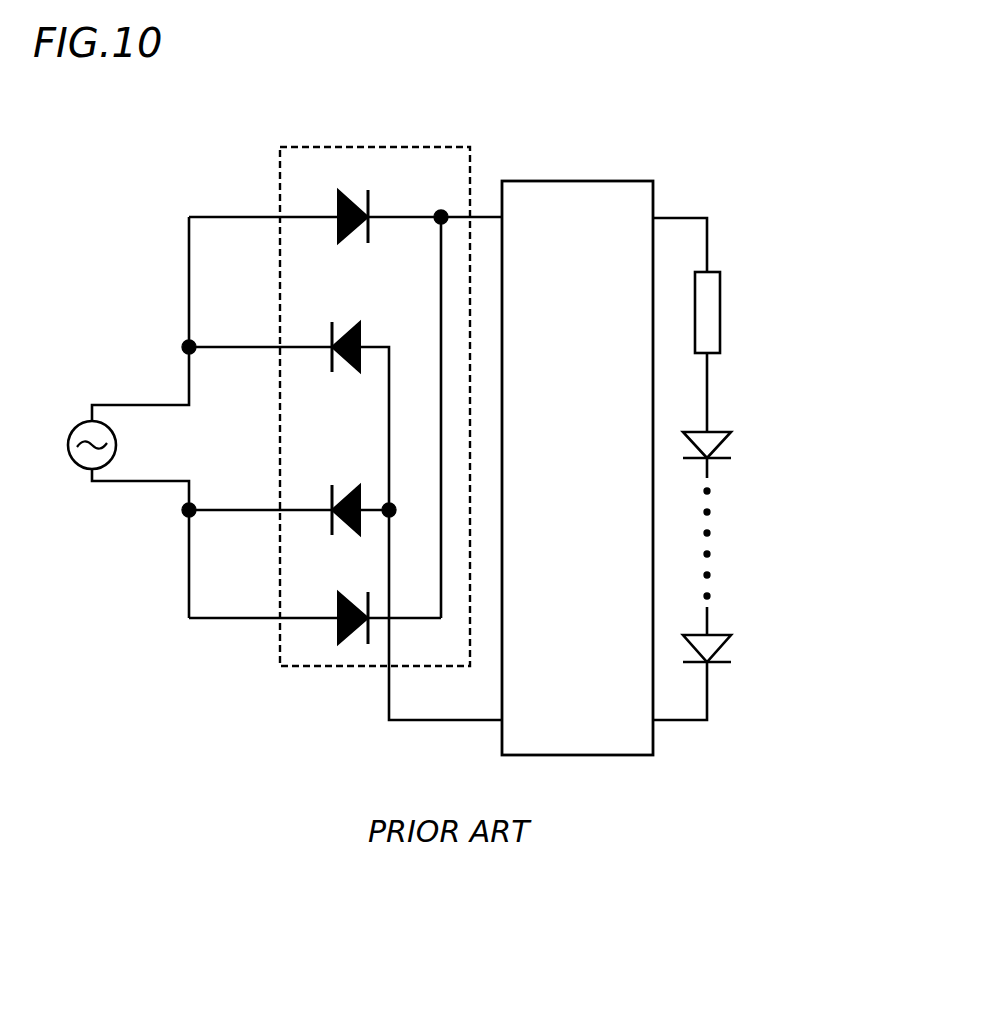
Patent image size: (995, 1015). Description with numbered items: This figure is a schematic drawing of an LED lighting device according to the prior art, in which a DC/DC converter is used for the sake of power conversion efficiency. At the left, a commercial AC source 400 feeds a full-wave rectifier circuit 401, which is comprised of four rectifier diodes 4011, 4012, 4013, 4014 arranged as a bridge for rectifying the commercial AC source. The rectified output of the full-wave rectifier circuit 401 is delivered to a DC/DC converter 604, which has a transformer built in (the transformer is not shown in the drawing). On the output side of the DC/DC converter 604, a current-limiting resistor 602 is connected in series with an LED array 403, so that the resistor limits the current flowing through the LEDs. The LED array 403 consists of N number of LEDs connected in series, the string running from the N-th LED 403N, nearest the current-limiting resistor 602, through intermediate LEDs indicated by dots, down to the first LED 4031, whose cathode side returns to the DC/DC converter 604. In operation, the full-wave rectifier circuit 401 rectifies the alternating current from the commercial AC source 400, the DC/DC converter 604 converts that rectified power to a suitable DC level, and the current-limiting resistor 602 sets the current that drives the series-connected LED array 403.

The commercial AC source 400 is at (114, 498).
The full-wave rectifier circuit 401 is at (274, 670).
The rectifier diode 4011 is at (336, 206).
The rectifier diode 4012 is at (380, 329).
The rectifier diode 4013 is at (348, 482).
The rectifier diode 4014 is at (330, 611).
The DC/DC converter 604 is at (597, 181).
The current-limiting resistor 602 is at (720, 300).
The LED array 403 is at (773, 527).
The LED 403N is at (742, 414).
The LED 4031 is at (732, 626).